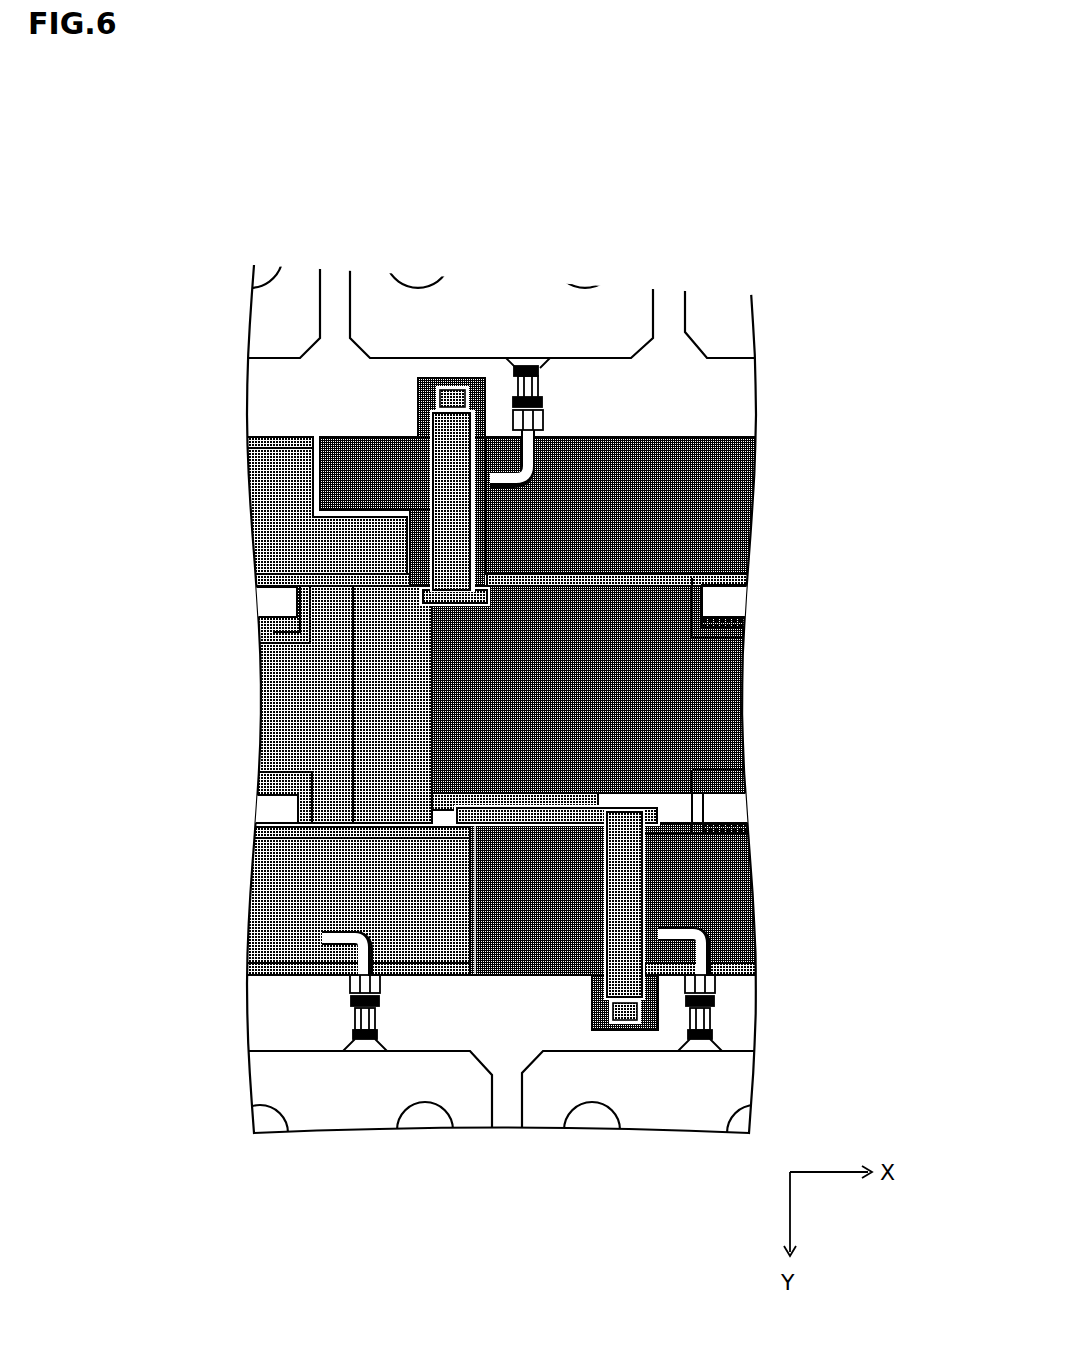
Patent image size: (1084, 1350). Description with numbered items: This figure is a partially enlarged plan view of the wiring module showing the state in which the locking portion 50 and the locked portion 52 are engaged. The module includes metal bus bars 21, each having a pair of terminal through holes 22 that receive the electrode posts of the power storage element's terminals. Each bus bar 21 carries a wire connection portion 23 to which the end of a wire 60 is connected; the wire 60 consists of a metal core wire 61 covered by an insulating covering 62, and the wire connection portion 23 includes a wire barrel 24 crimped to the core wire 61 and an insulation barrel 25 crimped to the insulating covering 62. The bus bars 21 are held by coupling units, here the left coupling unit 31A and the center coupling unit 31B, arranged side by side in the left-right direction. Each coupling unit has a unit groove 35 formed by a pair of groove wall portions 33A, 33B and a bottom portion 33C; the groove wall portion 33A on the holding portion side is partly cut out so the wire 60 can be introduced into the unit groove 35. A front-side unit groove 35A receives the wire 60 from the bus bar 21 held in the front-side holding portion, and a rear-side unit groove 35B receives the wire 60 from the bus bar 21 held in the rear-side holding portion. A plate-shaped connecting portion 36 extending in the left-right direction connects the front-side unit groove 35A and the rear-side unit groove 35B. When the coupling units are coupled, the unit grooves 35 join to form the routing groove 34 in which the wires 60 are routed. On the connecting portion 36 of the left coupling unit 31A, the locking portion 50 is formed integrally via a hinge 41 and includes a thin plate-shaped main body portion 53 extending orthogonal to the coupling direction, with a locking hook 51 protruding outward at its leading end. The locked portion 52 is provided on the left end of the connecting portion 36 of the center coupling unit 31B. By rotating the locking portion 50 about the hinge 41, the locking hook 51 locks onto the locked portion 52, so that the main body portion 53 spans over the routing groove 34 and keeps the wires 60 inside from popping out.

The bus bar 21 is at (492, 293).
The terminal through hole 22 is at (400, 263).
The wire connection portion 23 is at (637, 275).
The wire barrel 24 is at (543, 383).
The insulation barrel 25 is at (640, 437).
The left coupling unit 31A is at (287, 692).
The center coupling unit 31B is at (740, 690).
The groove wall portion 33A is at (257, 440).
The groove wall portion 33B is at (287, 572).
The bottom portion 33C is at (268, 968).
The routing groove 34 is at (697, 455).
The unit groove 35 is at (272, 468).
The front-side unit groove 35A is at (260, 920).
The rear-side unit groove 35B is at (268, 500).
The connecting portion 36 is at (290, 760).
The hinge 41 is at (440, 605).
The locking portion 50 is at (422, 691).
The locking hook 51 is at (480, 800).
The locked portion 52 is at (455, 388).
The main body portion 53 is at (440, 497).
The wire 60 is at (577, 702).
The core wire 61 is at (530, 364).
The insulating covering 62 is at (512, 490).